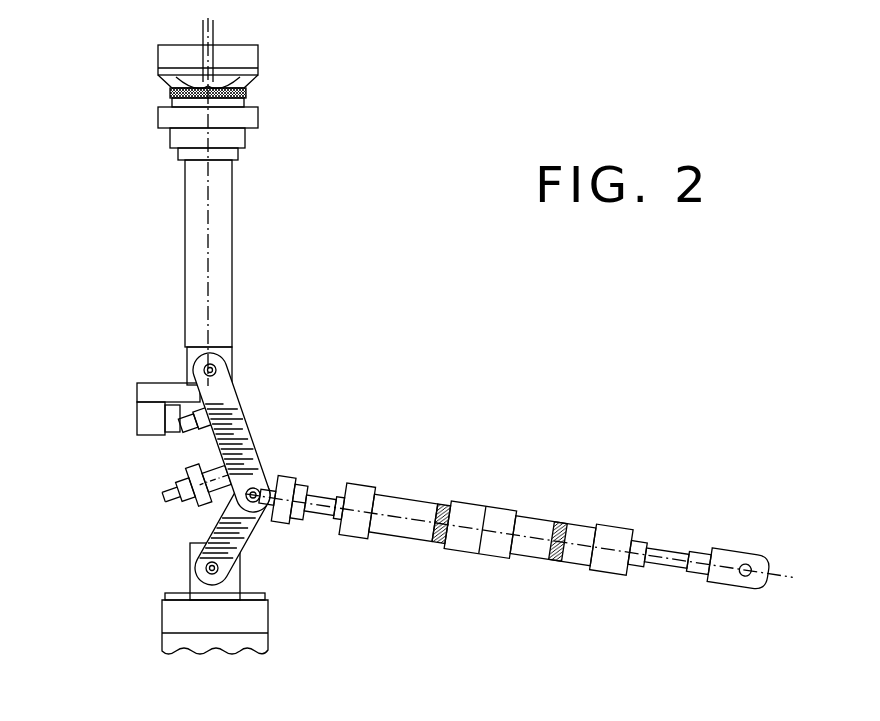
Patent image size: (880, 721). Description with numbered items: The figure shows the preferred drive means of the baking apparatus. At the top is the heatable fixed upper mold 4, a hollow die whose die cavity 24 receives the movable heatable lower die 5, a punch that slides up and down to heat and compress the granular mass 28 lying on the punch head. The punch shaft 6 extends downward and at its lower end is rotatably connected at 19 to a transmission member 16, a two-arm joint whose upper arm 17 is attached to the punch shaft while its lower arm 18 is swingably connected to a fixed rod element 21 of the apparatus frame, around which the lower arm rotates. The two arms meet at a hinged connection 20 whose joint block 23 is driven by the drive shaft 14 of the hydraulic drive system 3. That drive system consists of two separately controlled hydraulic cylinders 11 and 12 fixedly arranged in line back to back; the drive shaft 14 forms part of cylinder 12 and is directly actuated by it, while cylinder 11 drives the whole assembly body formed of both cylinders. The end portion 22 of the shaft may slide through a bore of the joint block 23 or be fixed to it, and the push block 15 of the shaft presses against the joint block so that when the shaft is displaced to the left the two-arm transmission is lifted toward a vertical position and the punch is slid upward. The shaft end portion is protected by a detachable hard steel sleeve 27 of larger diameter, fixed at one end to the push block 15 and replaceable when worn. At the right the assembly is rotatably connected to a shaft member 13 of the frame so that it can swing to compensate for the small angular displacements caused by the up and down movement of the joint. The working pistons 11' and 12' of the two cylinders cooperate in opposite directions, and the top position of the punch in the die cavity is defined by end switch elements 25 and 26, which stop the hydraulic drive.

The drive system 3 is at (483, 565).
The upper mold 4 is at (258, 50).
The lower die 5 is at (258, 110).
The punch shaft 6 is at (220, 225).
The hydraulic cylinder 11 is at (572, 507).
The working piston 11' is at (559, 574).
The hydraulic cylinder 12 is at (397, 482).
The working piston 12' is at (424, 553).
The shaft member 13 is at (745, 552).
The drive shaft 14 is at (318, 493).
The push block 15 is at (280, 468).
The transmission member 16 is at (215, 447).
The upper arm 17 is at (228, 388).
The lower arm 18 is at (240, 566).
The rotatable connection 19 is at (190, 348).
The hinged connection 20 is at (265, 462).
The rod element 21 is at (237, 577).
The end position of shaft 22 is at (176, 479).
The joint block 23 is at (265, 512).
The die cavity 24 is at (212, 82).
The end switch element 25 is at (188, 410).
The end switch element 26 is at (150, 418).
The hard steel sleeve 27 is at (198, 506).
The granular mass 28 is at (176, 92).